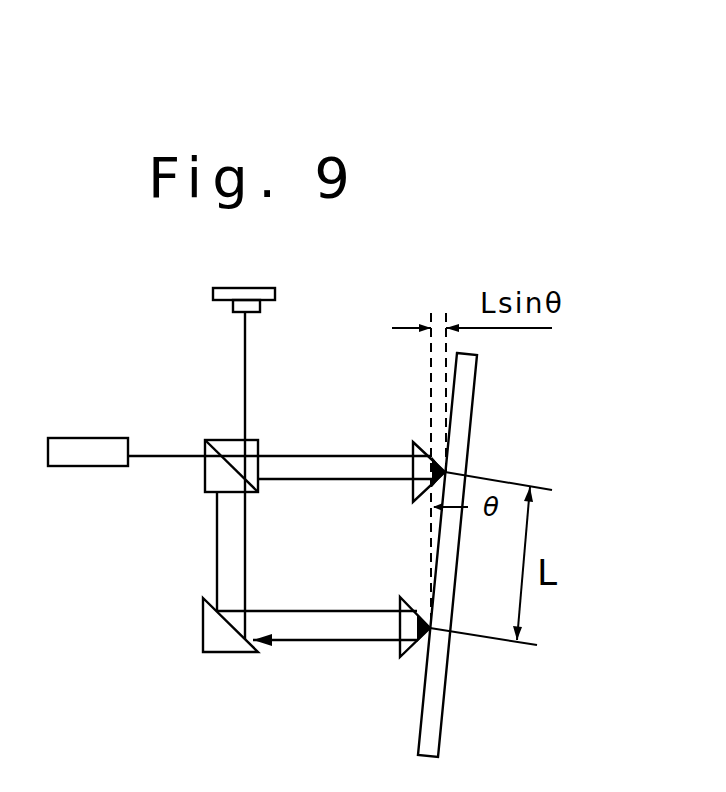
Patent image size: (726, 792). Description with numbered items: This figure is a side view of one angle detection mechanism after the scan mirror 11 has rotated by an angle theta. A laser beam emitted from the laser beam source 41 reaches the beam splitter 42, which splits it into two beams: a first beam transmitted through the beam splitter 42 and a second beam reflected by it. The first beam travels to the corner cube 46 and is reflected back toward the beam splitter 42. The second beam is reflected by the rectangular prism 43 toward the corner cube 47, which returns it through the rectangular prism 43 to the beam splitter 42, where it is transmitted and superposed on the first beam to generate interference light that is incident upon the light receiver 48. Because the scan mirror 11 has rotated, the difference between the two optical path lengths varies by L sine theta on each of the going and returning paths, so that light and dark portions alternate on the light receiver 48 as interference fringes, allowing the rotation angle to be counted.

The scan mirror 11 is at (462, 371).
The laser beam source 41 is at (80, 440).
The beam splitter 42 is at (218, 443).
The rectangular prism 43 is at (205, 627).
The corner cube 46 is at (413, 444).
The corner cube 47 is at (400, 605).
The light receiver 48 is at (255, 305).